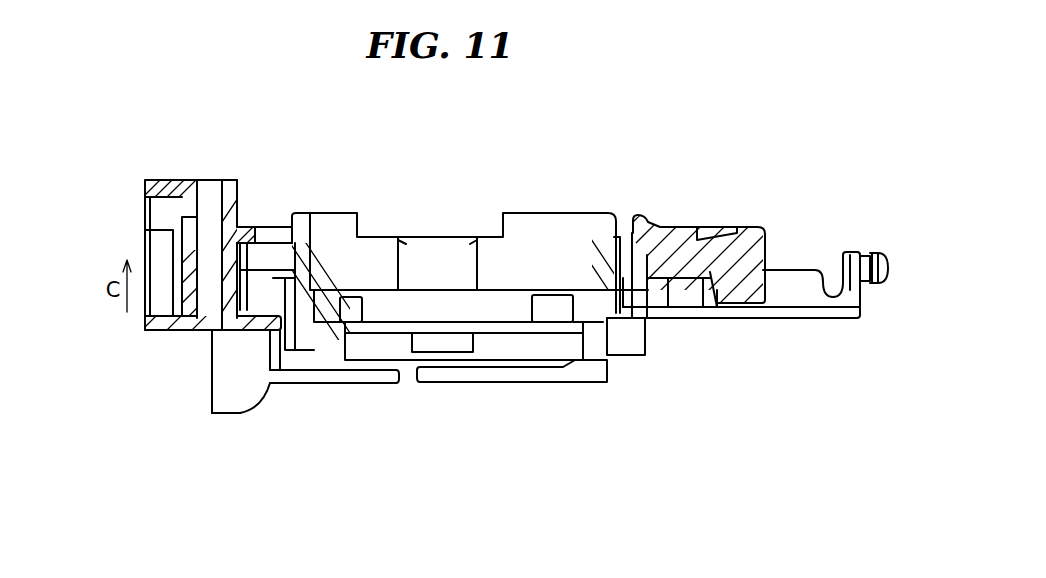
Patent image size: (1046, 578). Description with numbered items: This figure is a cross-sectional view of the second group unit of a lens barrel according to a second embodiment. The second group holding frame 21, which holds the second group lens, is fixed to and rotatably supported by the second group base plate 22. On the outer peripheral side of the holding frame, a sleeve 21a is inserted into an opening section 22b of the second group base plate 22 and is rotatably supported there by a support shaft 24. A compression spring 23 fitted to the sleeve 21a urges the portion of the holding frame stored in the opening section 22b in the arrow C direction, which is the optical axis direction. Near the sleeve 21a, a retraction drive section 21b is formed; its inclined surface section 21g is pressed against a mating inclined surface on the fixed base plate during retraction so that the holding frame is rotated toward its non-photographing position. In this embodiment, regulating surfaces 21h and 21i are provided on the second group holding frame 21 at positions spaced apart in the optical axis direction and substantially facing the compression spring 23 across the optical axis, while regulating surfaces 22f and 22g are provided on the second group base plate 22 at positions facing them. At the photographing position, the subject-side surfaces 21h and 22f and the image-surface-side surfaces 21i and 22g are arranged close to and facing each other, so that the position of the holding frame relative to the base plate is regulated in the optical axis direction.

The second group holding frame 21 is at (247, 257).
The sleeve 21a is at (228, 252).
The retraction drive section 21b is at (226, 388).
The inclined surface section 21g is at (253, 397).
The regulating surface 21h is at (640, 250).
The regulating surface 21i is at (632, 300).
The second group base plate 22 is at (192, 182).
The opening section 22b is at (150, 242).
The regulating surface 22f is at (655, 250).
The regulating surface 22g is at (615, 305).
The compression spring 23 is at (173, 283).
The support shaft 24 is at (207, 217).